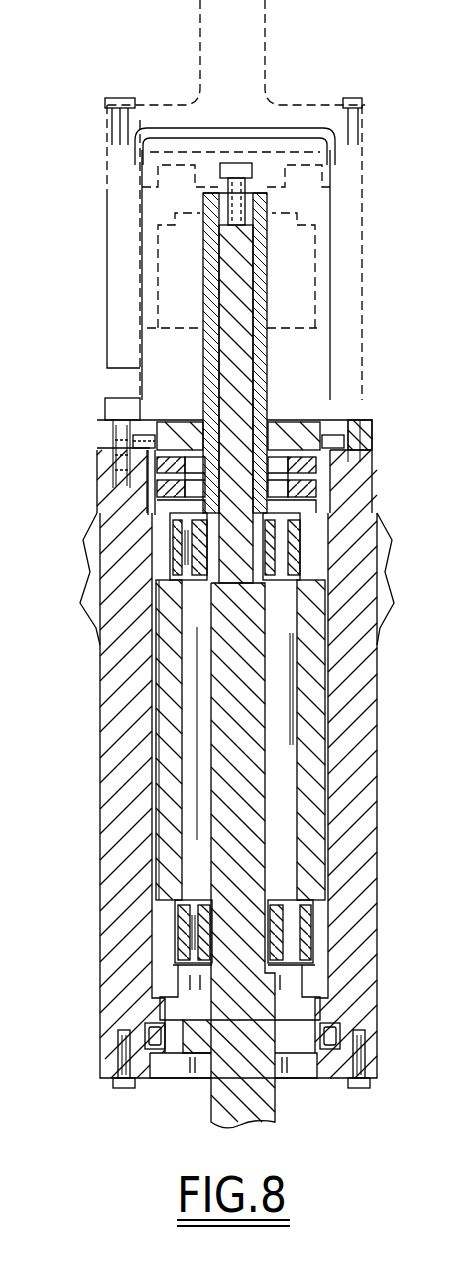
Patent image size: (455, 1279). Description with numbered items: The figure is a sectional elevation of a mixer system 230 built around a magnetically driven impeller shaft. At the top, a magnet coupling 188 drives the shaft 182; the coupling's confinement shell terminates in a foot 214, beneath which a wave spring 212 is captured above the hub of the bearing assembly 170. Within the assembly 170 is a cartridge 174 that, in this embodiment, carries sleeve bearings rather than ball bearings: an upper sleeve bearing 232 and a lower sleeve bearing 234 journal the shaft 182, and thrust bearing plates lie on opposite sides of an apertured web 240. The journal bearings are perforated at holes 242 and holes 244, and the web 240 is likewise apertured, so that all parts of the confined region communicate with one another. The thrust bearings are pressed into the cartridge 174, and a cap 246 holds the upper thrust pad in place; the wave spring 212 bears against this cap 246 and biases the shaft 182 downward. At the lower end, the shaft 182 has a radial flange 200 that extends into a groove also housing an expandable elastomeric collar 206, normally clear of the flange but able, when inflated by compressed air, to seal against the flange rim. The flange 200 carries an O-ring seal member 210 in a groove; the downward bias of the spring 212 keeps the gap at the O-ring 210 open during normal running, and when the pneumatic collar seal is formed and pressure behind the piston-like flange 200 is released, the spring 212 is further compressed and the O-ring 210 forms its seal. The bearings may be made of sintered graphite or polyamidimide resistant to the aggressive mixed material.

The magnet coupling 188 is at (98, 205).
The wave spring 212 is at (150, 440).
The cap 246 is at (300, 445).
The foot of the confinement shell 214 is at (372, 440).
The web 240 is at (165, 480).
The upper sleeve bearing 232 is at (180, 537).
The holes 242 is at (185, 556).
The mixer system 230 is at (97, 617).
The shaft 182 is at (258, 727).
The assembly 170 is at (355, 749).
The cartridge 174 is at (157, 765).
The holes 244 is at (185, 912).
The lower sleeve bearing 234 is at (180, 940).
The expandable elastomeric collar 206 is at (145, 1035).
The O-ring seal member 210 is at (195, 1078).
The flange 200 is at (295, 1037).